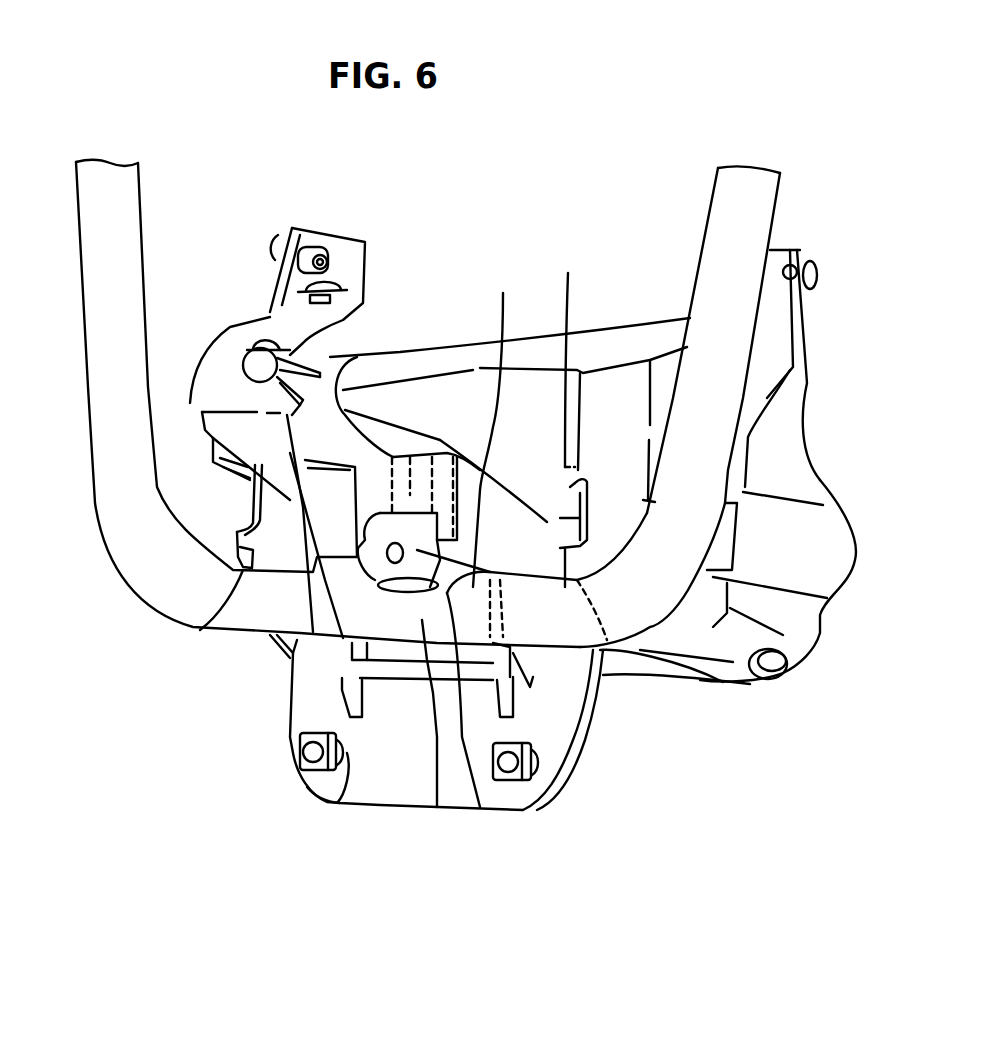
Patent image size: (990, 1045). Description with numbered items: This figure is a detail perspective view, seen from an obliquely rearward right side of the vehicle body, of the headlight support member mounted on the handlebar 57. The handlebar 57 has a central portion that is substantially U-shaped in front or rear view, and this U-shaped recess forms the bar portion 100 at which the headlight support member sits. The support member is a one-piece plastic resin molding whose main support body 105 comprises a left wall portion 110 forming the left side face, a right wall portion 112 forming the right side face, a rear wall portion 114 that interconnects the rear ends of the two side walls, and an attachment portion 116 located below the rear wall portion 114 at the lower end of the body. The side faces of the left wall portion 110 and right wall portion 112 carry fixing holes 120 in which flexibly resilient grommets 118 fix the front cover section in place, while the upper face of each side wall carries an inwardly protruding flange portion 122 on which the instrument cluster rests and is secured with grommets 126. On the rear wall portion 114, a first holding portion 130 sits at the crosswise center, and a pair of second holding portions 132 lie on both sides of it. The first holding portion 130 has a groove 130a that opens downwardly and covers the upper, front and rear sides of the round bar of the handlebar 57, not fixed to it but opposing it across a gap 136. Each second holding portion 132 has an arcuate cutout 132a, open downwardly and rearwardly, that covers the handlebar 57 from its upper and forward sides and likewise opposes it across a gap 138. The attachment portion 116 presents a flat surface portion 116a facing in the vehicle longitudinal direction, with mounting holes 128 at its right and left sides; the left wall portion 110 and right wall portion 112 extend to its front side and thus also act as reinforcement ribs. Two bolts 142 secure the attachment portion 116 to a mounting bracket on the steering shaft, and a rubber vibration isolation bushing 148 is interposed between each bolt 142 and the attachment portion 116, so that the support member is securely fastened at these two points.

The handlebar 57 is at (715, 262).
The bar portion 100 is at (247, 657).
The main support body 105 is at (771, 428).
The left wall portion 110 is at (200, 393).
The right wall portion 112 is at (803, 538).
The rear wall portion 114 is at (412, 480).
The attachment portion 116 is at (332, 805).
The flat surface portion 116a is at (392, 768).
The grommet 118 is at (275, 245).
The fixing hole 120 is at (330, 260).
The flange portion 122 is at (283, 320).
The grommet 126 is at (335, 328).
The mounting hole 128 is at (347, 780).
The first holding portion 130 is at (437, 807).
The groove 130a is at (480, 807).
The second holding portion 132 is at (237, 533).
The arcuate cutout 132a is at (203, 630).
The gap 136 is at (501, 449).
The gap 138 is at (77, 553).
The bolt 142 is at (302, 756).
The rubber vibration isolation bushing 148 is at (310, 772).